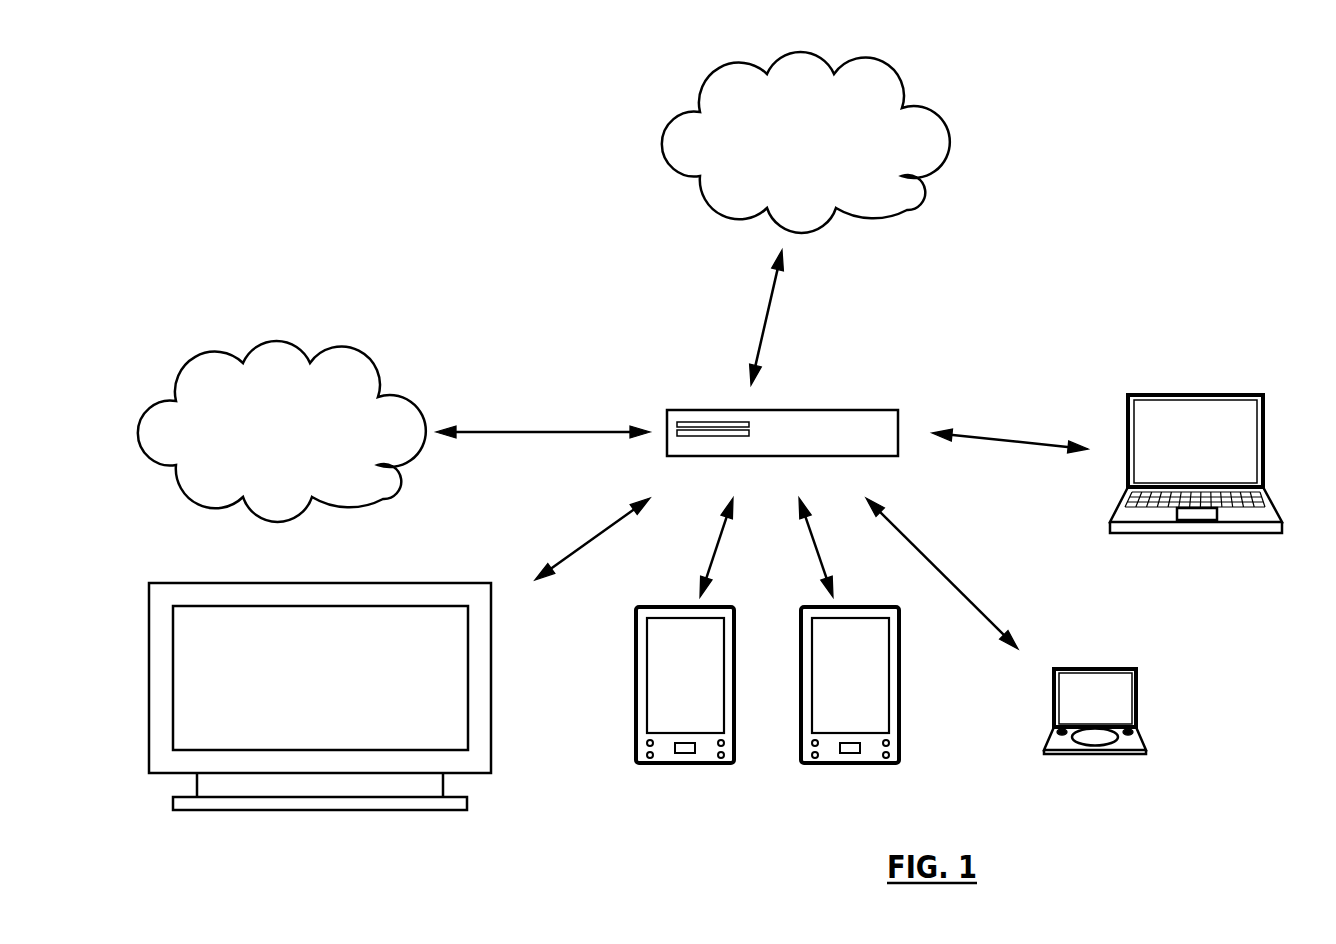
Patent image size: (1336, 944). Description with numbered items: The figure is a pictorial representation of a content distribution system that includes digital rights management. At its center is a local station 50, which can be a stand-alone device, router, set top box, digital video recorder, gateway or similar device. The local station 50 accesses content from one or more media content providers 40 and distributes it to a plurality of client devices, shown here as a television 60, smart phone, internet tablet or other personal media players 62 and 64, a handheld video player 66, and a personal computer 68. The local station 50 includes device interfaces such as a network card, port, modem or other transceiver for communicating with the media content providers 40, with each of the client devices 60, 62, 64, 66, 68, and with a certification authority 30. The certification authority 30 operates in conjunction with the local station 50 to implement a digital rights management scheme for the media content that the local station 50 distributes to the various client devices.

The certification authority 30 is at (806, 142).
The media content providers 40 is at (282, 431).
The local station 50 is at (854, 434).
The television 60 is at (215, 638).
The personal media player 62 is at (680, 646).
The personal media player 64 is at (845, 646).
The handheld video player 66 is at (1091, 706).
The personal computer 68 is at (1179, 466).